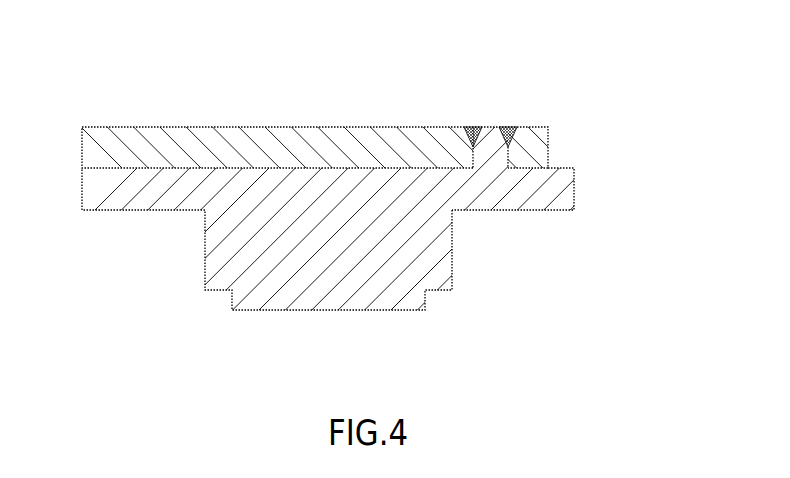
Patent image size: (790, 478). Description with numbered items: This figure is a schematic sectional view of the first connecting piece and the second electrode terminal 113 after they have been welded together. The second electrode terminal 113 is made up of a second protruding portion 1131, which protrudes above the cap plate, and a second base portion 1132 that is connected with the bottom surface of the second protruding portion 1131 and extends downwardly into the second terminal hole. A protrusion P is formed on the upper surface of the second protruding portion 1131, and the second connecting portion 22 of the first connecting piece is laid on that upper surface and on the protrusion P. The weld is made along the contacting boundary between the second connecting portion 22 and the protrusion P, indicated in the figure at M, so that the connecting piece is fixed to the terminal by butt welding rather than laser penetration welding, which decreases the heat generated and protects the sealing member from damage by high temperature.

The second connecting portion 22 is at (175, 127).
The second electrode terminal 113 is at (366, 218).
The second protruding portion 1131 is at (576, 180).
The second base portion 1132 is at (440, 268).
The first notch / mark M is at (470, 127).
The protrusion P is at (490, 127).